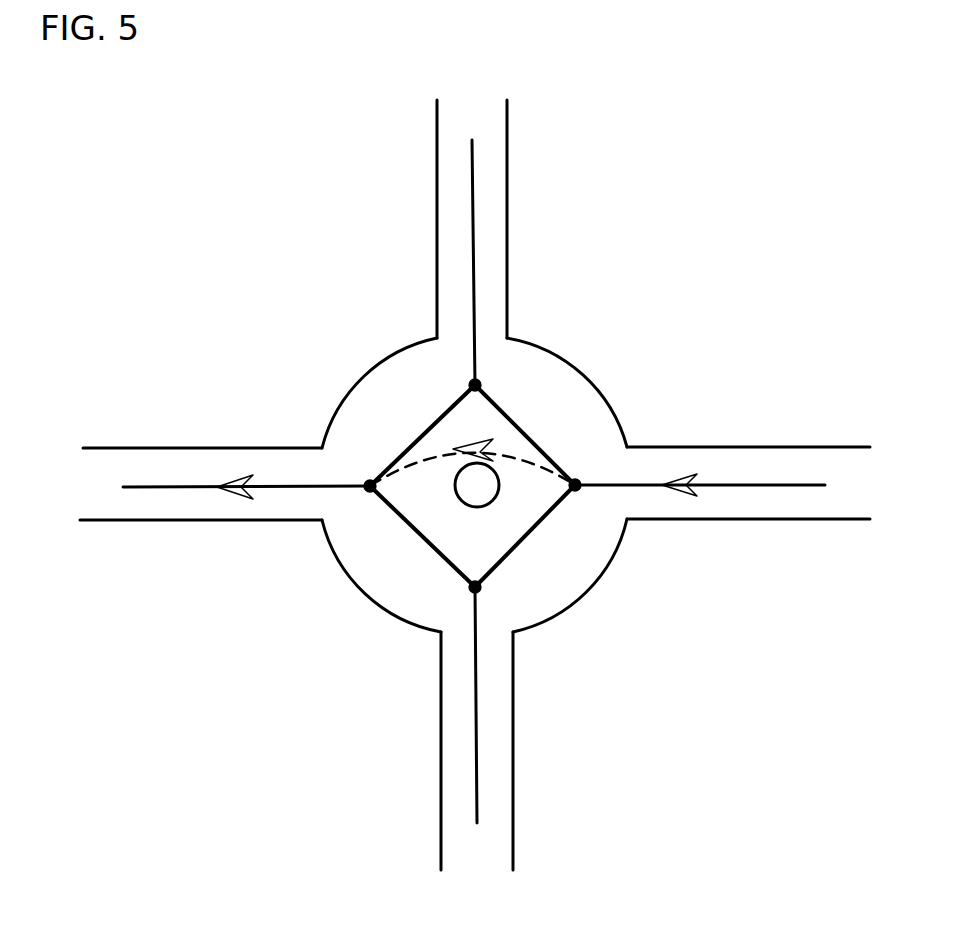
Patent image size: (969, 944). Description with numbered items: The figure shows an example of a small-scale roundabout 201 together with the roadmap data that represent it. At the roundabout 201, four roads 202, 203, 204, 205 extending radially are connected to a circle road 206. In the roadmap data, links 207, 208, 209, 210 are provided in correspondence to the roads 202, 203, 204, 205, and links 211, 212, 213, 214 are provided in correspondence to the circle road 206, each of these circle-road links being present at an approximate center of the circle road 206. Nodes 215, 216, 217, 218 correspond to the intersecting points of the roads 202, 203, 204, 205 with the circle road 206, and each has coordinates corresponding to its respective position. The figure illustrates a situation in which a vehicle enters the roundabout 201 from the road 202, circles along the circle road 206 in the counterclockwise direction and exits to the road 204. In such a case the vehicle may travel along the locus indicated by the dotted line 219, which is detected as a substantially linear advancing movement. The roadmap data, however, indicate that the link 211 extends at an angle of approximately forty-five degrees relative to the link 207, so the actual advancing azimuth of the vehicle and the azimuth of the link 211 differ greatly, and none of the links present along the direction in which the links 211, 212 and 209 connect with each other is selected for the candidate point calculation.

The small-scale roundabout 201 is at (669, 137).
The road 202 is at (730, 447).
The road 203 is at (508, 158).
The road 204 is at (263, 449).
The road 205 is at (513, 797).
The circle road 206 is at (558, 395).
The link 207 is at (760, 485).
The link 208 is at (473, 230).
The link 209 is at (187, 488).
The link 210 is at (477, 727).
The link 211 is at (597, 457).
The link 212 is at (403, 450).
The link 213 is at (427, 545).
The link 214 is at (522, 547).
The node 215 is at (580, 493).
The node 216 is at (478, 383).
The node 217 is at (366, 494).
The node 218 is at (470, 592).
The dotted line 219 is at (450, 443).